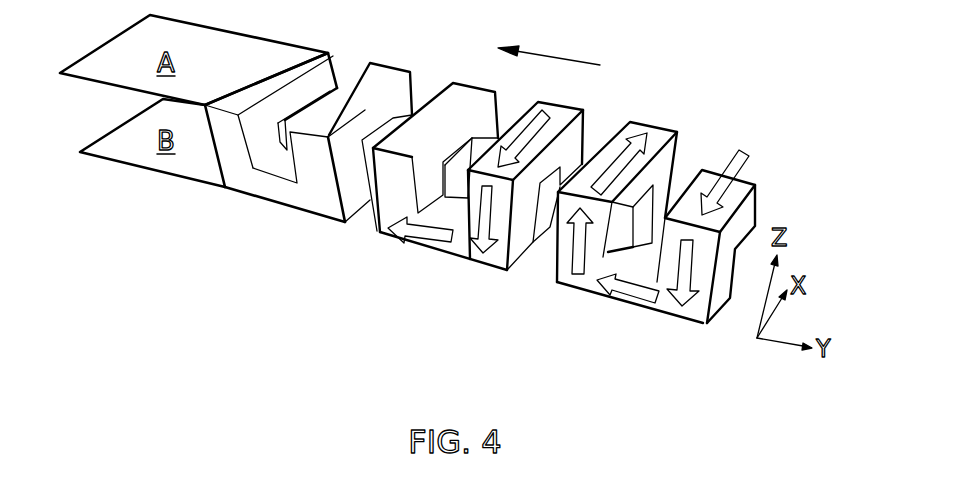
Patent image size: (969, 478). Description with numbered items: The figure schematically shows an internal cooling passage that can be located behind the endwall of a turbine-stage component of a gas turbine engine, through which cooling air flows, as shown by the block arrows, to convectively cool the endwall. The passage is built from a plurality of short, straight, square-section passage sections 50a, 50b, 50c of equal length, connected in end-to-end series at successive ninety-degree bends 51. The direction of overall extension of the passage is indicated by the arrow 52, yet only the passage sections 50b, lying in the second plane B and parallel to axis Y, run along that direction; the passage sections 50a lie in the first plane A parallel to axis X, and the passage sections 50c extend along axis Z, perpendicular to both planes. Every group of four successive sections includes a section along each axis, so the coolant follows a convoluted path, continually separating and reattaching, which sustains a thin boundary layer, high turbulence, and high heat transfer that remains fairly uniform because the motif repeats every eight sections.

The passage section 50a is at (303, 58).
The passage section 50b is at (247, 187).
The passage section 50c is at (320, 175).
The 90° bend 51 is at (480, 264).
The arrow indicating direction of overall extension 52 is at (570, 58).